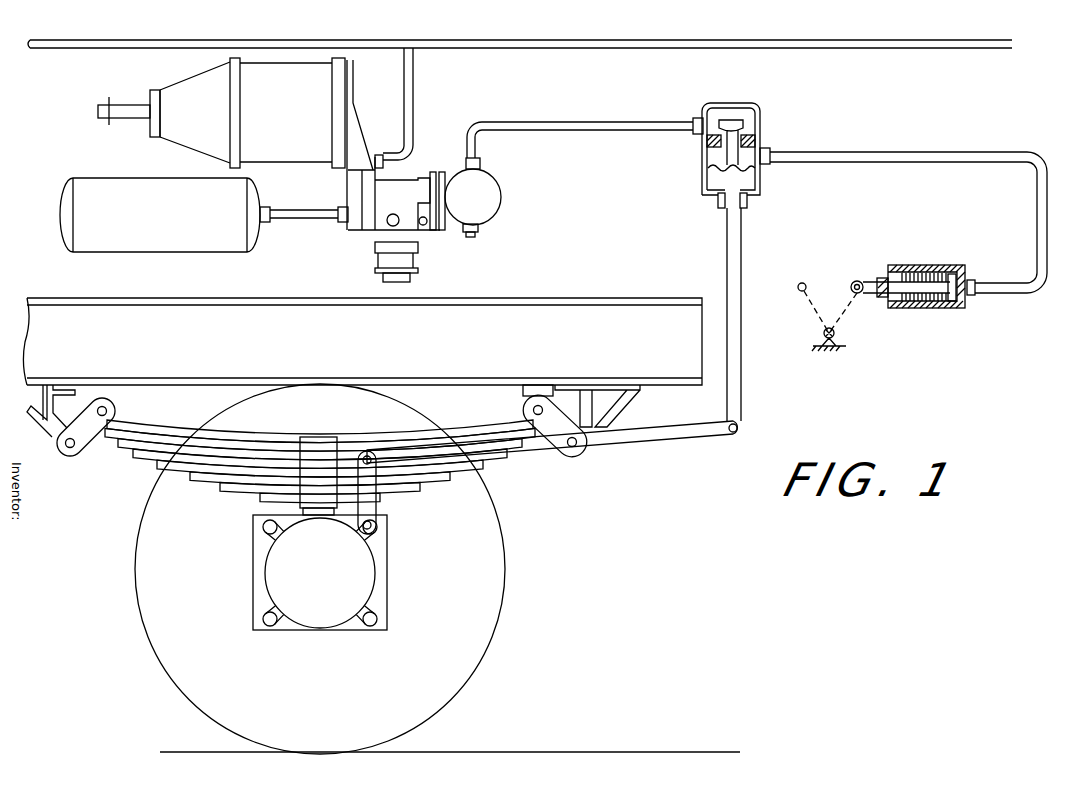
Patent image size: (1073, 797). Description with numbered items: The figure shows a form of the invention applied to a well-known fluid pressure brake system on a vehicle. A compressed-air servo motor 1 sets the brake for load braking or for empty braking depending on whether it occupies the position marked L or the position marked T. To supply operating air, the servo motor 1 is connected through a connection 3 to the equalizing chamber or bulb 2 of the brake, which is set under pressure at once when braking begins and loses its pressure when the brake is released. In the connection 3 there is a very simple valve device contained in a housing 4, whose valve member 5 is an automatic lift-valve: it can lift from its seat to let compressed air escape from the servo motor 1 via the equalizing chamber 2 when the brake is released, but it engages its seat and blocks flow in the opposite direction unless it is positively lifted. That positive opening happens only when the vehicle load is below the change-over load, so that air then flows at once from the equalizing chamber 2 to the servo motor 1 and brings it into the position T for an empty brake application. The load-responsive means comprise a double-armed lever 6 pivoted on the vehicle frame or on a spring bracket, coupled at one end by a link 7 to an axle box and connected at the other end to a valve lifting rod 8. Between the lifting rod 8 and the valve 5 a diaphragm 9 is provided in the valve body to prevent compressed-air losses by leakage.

The compressed-air servo motor 1 is at (923, 265).
The equalizing chamber or bulb 2 is at (477, 188).
The connection 3 is at (587, 123).
The housing 4 is at (757, 103).
The valve member 5 is at (742, 127).
The double-armed lever 6 is at (523, 447).
The link 7 is at (368, 505).
The valve lifting rod 8 is at (733, 307).
The diaphragm 9 is at (750, 170).
The load braking position L is at (859, 280).
The empty braking position T is at (810, 296).